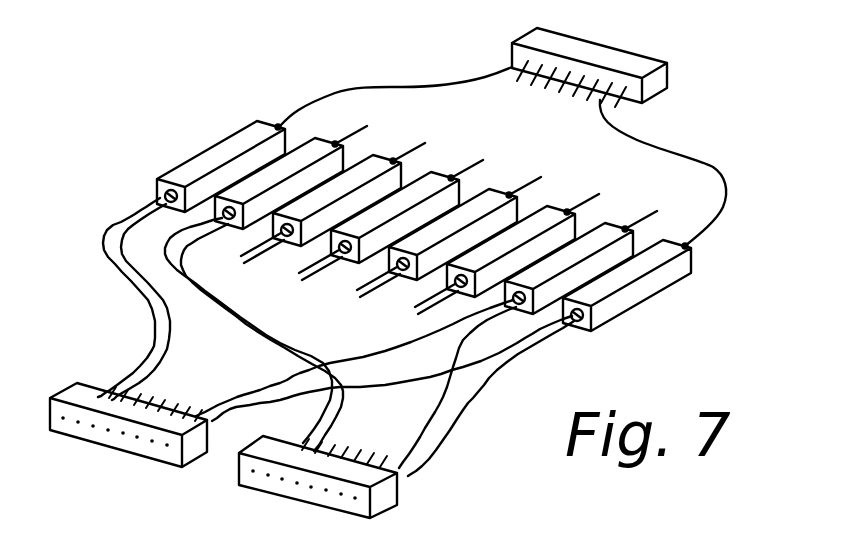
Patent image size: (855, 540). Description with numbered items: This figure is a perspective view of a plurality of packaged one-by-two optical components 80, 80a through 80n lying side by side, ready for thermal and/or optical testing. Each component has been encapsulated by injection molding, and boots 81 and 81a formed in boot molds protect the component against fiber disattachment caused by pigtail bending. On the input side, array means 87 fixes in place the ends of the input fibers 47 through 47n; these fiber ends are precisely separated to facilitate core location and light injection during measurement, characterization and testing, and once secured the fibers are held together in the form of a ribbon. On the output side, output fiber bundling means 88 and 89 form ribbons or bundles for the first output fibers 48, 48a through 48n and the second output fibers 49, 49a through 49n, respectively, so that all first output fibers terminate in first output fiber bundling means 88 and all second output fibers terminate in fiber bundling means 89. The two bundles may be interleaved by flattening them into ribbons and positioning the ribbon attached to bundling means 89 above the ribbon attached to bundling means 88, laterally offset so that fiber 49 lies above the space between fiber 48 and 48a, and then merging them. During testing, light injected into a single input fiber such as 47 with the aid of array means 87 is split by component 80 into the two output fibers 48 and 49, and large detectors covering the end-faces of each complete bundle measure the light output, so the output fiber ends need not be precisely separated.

The input fiber 47 is at (731, 193).
The input fiber 47n is at (365, 90).
The first output fiber 48 is at (527, 343).
The first output fiber 48a is at (432, 420).
The first output fiber 48n is at (208, 300).
The second output fiber 49 is at (497, 353).
The second output fiber 49a is at (411, 338).
The second output fiber 49n is at (150, 320).
The 1×2 component 80 is at (644, 287).
The 1×2 component 80a is at (603, 230).
The 1×2 component 80n is at (218, 143).
The boot 81 is at (160, 197).
The boot 81a is at (278, 124).
The array means 87 is at (598, 44).
The first output fiber bundling means 88 is at (323, 490).
The fiber bundling means 89 is at (115, 440).